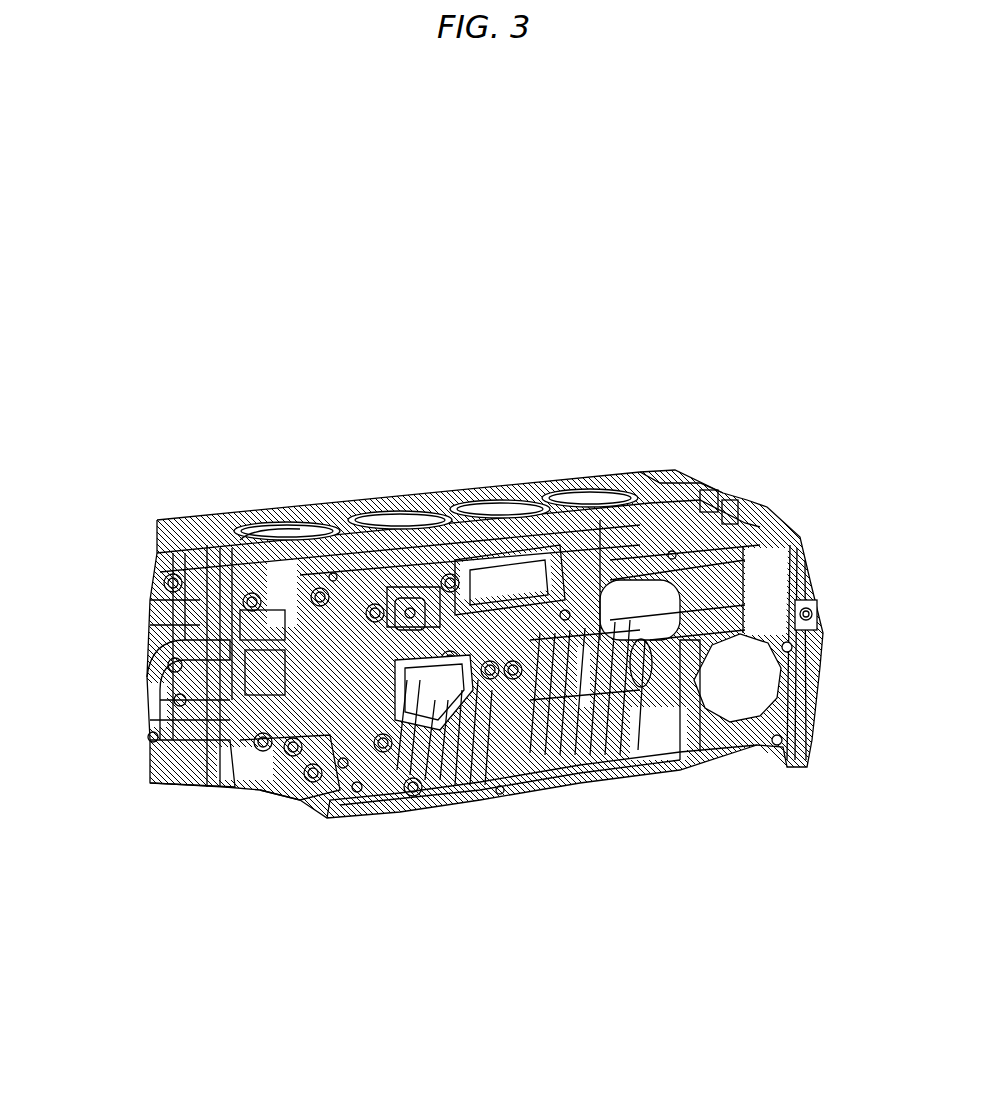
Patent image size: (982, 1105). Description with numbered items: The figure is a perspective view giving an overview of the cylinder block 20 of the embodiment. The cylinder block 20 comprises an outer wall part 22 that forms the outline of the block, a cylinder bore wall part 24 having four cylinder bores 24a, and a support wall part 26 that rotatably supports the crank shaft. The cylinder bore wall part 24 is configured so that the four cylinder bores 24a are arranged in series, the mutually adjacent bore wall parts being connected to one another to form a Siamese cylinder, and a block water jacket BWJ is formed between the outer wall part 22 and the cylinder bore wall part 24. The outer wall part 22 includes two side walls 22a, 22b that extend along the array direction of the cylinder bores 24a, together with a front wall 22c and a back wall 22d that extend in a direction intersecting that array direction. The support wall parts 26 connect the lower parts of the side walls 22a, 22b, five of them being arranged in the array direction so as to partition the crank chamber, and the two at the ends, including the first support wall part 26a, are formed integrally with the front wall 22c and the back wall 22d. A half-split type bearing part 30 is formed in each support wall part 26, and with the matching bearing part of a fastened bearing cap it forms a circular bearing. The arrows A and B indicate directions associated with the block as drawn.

The cylinder block 20 is at (458, 579).
The outer wall part 22 is at (419, 414).
The side wall 22a is at (650, 530).
The side wall 22b is at (367, 493).
The front wall 22c is at (268, 648).
The back wall 22d is at (668, 480).
The cylinder bore wall part 24 is at (436, 407).
The cylinder bore 24a is at (320, 532).
The support wall part 26 is at (188, 766).
The first support wall part 26a is at (243, 745).
The bearing part 30 is at (262, 768).
The block water jacket BWJ is at (258, 522).
The viewing direction A is at (565, 822).
The viewing direction B is at (817, 535).